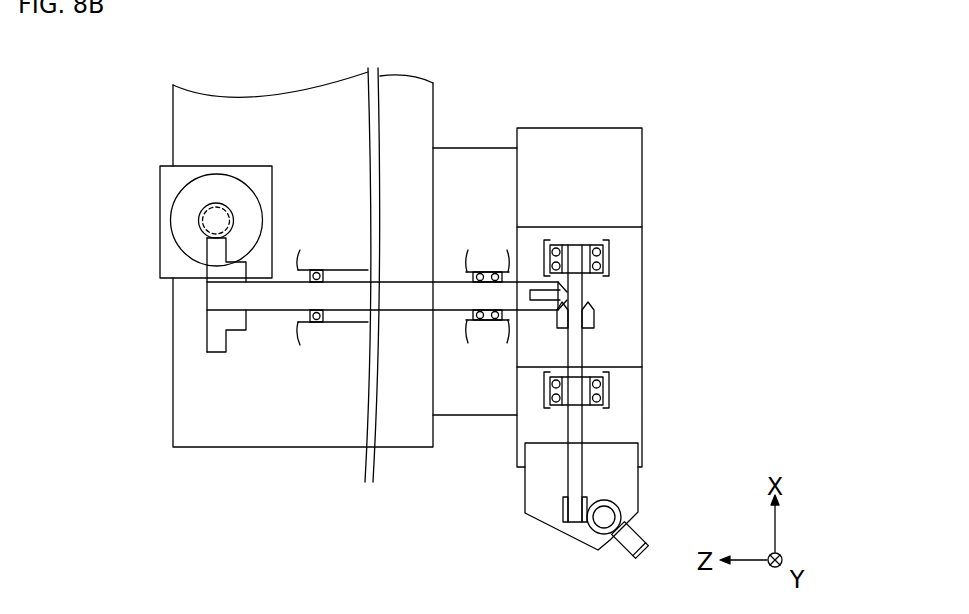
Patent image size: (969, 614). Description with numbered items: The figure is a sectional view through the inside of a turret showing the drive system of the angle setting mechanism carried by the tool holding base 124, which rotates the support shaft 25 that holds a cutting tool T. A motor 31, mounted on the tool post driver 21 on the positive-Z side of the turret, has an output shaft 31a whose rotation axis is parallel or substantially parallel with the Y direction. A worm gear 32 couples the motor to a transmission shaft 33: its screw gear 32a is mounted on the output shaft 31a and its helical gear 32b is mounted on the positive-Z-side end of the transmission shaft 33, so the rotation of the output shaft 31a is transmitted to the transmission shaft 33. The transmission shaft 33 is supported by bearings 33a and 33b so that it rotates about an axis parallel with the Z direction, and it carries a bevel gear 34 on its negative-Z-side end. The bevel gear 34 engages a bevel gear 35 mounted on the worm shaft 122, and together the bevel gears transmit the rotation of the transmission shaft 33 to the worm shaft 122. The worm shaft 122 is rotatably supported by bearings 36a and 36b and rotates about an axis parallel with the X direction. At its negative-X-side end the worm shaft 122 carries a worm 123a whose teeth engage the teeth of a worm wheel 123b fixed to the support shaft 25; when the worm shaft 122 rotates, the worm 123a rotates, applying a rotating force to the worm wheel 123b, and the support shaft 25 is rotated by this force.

The tool post driver 21 is at (422, 98).
The motor 31 is at (166, 175).
The output shaft 31a is at (200, 213).
The worm gear 32 is at (144, 292).
The screw gear 32a is at (198, 232).
The helical gear 32b is at (212, 323).
The transmission shaft 33 is at (268, 300).
The bearing 33a is at (316, 322).
The bearing 33b is at (484, 270).
The bevel gear 34 is at (560, 288).
The bevel gear 35 is at (594, 318).
The bearing 36a is at (603, 253).
The bearing 36b is at (598, 383).
The worm shaft 122 is at (577, 453).
The worm 123a is at (562, 508).
The worm wheel 123b is at (593, 519).
The tool holding base 124 is at (528, 482).
The support shaft 25 is at (604, 520).
The cutting tool T is at (647, 548).